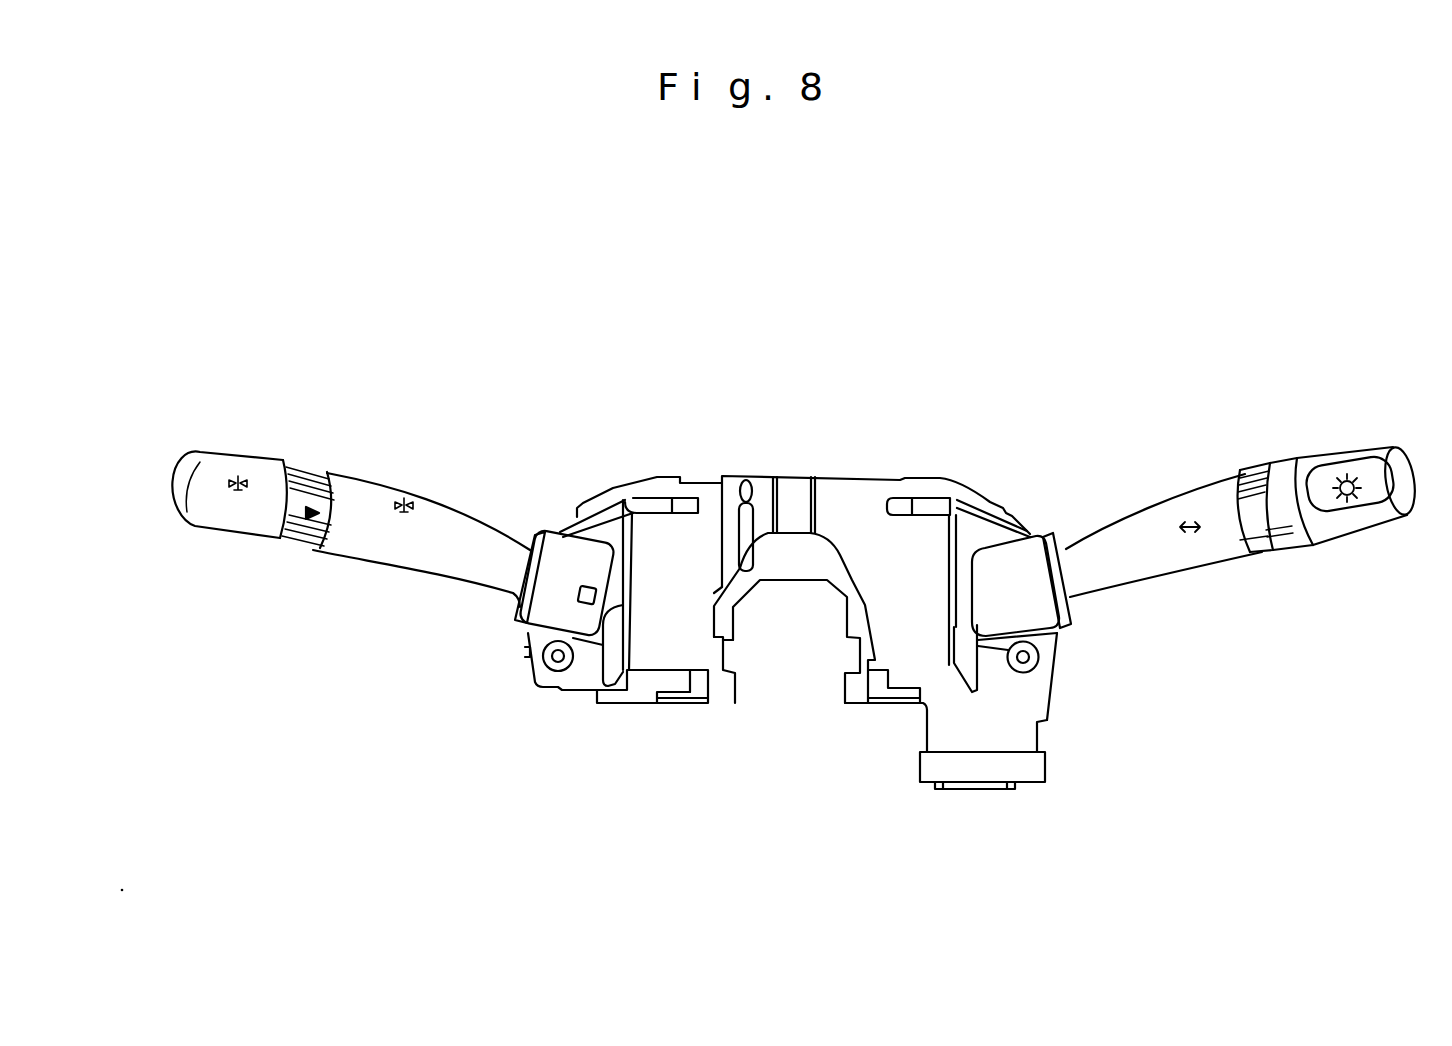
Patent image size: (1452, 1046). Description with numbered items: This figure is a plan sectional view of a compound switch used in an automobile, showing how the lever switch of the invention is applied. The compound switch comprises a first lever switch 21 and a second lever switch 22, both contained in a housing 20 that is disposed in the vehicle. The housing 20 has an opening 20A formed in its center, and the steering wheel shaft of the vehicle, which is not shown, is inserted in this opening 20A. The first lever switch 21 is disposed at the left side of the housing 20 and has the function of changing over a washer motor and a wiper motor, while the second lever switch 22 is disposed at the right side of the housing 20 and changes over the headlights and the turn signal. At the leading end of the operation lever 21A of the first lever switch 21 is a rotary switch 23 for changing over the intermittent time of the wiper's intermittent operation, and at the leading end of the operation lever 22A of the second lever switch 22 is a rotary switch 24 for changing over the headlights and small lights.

The housing 20 is at (855, 510).
The opening 20A is at (800, 655).
The first lever switch 21 is at (570, 600).
The operation lever 21A is at (410, 542).
The second lever switch 22 is at (1018, 565).
The operation lever 22A is at (1143, 533).
The rotary switch 23 is at (290, 550).
The rotary switch 24 is at (1350, 523).